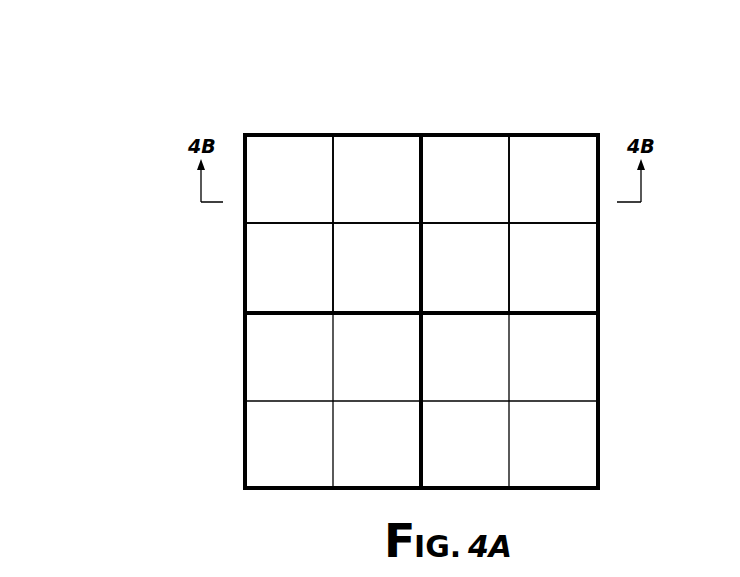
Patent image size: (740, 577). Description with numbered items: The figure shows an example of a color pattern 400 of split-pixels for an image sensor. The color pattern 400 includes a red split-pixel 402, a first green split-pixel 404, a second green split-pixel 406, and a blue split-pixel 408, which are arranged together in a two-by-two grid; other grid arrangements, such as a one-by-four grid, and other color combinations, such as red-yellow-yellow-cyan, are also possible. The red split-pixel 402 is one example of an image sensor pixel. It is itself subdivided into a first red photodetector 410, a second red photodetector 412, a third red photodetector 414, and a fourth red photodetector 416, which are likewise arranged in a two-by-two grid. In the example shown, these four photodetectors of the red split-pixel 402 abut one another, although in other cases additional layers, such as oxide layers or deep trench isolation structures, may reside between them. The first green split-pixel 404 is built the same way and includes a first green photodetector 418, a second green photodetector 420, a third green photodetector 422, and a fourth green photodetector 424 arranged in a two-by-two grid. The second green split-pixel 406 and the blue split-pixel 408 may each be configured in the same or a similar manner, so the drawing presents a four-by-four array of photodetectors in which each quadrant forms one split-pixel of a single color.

The color pattern 400 is at (128, 66).
The red split-pixel 402 is at (245, 135).
The first green split-pixel 404 is at (598, 135).
The second green split-pixel 406 is at (243, 488).
The blue split-pixel 408 is at (600, 488).
The first red photodetector 410 is at (300, 143).
The second red photodetector 412 is at (397, 145).
The third red photodetector 414 is at (262, 238).
The fourth red photodetector 416 is at (350, 292).
The first green photodetector 418 is at (485, 145).
The second green photodetector 420 is at (573, 145).
The third green photodetector 422 is at (495, 292).
The fourth green photodetector 424 is at (582, 238).